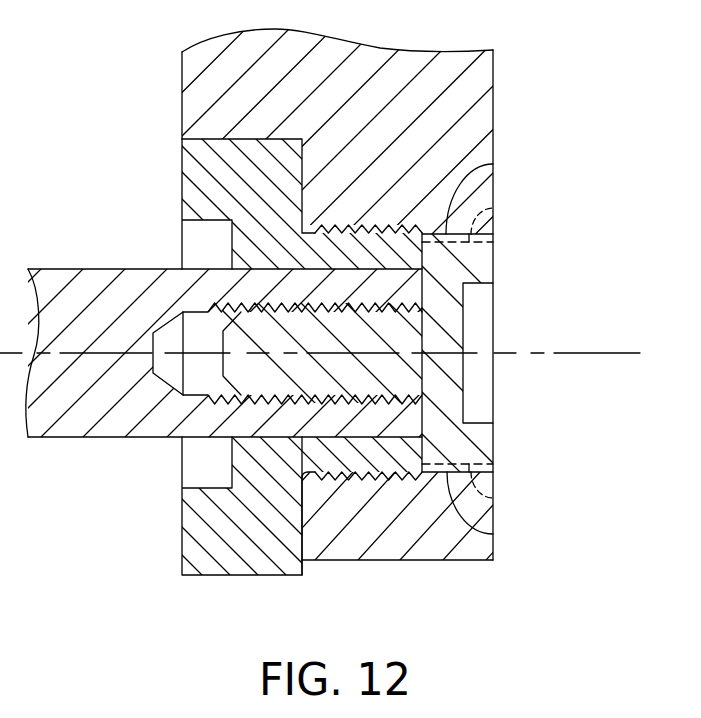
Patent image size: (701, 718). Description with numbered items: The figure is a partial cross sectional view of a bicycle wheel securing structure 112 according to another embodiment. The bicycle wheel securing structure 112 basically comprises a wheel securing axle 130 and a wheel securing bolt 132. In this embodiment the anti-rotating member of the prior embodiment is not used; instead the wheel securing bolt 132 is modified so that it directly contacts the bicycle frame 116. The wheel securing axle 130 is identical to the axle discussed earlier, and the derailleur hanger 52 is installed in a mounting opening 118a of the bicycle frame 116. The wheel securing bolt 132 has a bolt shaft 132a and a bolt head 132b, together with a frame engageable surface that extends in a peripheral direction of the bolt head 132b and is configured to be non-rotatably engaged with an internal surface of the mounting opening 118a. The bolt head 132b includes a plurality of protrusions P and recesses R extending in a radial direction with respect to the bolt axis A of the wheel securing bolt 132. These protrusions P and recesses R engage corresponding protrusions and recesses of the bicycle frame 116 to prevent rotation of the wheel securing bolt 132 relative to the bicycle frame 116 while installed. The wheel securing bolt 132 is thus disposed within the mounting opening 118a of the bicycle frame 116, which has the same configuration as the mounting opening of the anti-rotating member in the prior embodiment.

The bicycle frame 116 is at (493, 108).
The derailleur hanger 52 is at (182, 535).
The wheel securing axle 130 is at (94, 268).
The bolt shaft 132a is at (258, 372).
The mounting opening 118a is at (267, 313).
The wheel securing bolt 132 is at (495, 445).
The bolt head 132b is at (483, 423).
The bicycle wheel securing structure 112 is at (577, 257).
The bolt axis A is at (611, 353).
The protrusion P is at (493, 161).
The recess R is at (498, 203).